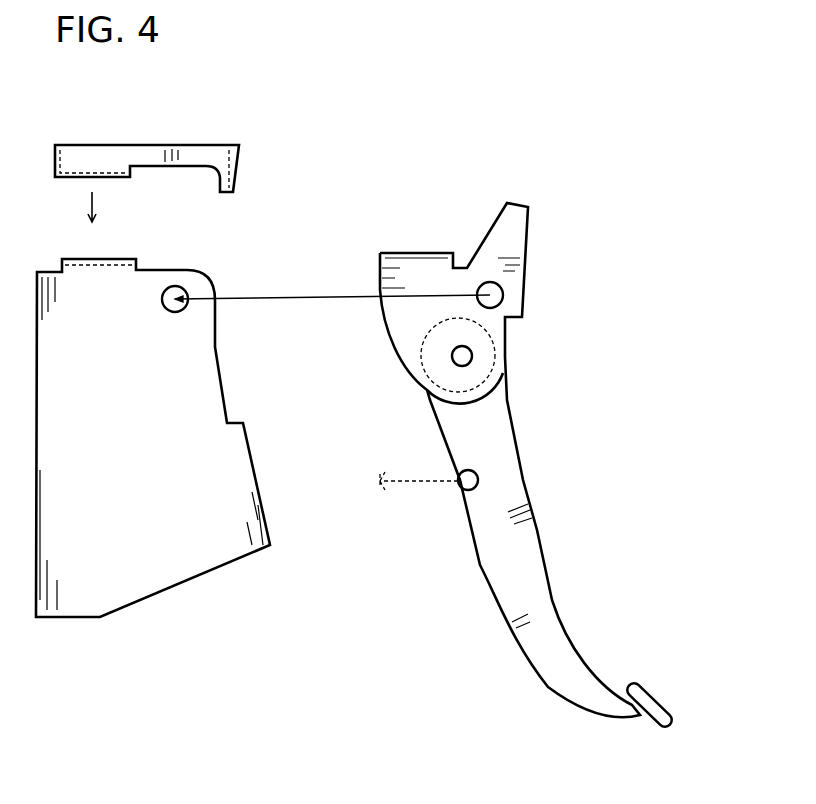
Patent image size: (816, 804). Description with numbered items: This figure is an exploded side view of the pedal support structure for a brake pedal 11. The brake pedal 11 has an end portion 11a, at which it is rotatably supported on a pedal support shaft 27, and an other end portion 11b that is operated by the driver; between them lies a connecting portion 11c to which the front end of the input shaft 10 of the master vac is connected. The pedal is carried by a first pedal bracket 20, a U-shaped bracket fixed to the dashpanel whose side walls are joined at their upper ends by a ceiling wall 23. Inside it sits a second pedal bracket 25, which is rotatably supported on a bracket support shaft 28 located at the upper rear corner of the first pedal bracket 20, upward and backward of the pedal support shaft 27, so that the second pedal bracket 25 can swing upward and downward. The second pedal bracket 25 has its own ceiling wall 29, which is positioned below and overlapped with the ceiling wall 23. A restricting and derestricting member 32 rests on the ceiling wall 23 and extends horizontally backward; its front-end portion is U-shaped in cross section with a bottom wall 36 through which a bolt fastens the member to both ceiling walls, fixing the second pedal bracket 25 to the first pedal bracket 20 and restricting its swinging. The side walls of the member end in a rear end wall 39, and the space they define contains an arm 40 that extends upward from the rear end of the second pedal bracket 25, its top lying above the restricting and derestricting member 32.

The input shaft 10 is at (420, 484).
The brake pedal 11 is at (522, 528).
The end portion 11a is at (507, 327).
The other end portion 11b is at (655, 700).
The connecting portion 11c is at (478, 472).
The first pedal bracket 20 is at (190, 563).
The ceiling wall 23 is at (115, 255).
The second pedal bracket 25 is at (410, 338).
The pedal support shaft 27 is at (470, 352).
The bracket support shaft 28 is at (178, 287).
The ceiling wall 29 is at (433, 253).
The restricting and derestricting member 32 is at (205, 157).
The bottom wall 36 is at (80, 170).
The rear end wall 39 is at (240, 165).
The arm 40 is at (518, 228).